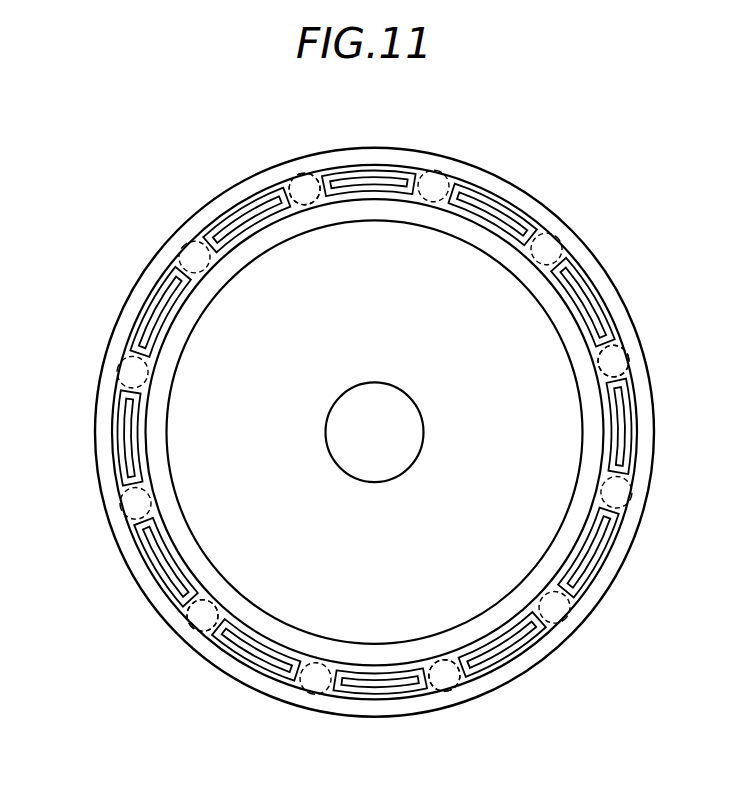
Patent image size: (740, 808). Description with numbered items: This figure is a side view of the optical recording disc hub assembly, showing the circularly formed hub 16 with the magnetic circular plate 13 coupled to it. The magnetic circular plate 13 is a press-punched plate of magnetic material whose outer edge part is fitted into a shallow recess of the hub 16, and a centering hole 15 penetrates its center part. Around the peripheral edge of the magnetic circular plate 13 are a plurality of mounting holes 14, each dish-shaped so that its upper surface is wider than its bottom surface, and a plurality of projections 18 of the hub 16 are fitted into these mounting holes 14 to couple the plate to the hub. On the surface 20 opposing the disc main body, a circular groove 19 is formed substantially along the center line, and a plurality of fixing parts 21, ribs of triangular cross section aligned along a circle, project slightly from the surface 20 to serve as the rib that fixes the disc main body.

The magnetic circular plate 13 is at (393, 238).
The mounting holes 14 is at (307, 201).
The centering hole 15 is at (338, 397).
The hub 16 is at (207, 201).
The projections 18 is at (301, 176).
The circular groove 19 is at (482, 187).
The surface opposing the disc main body 20 is at (565, 540).
The fixing parts 21 is at (363, 172).